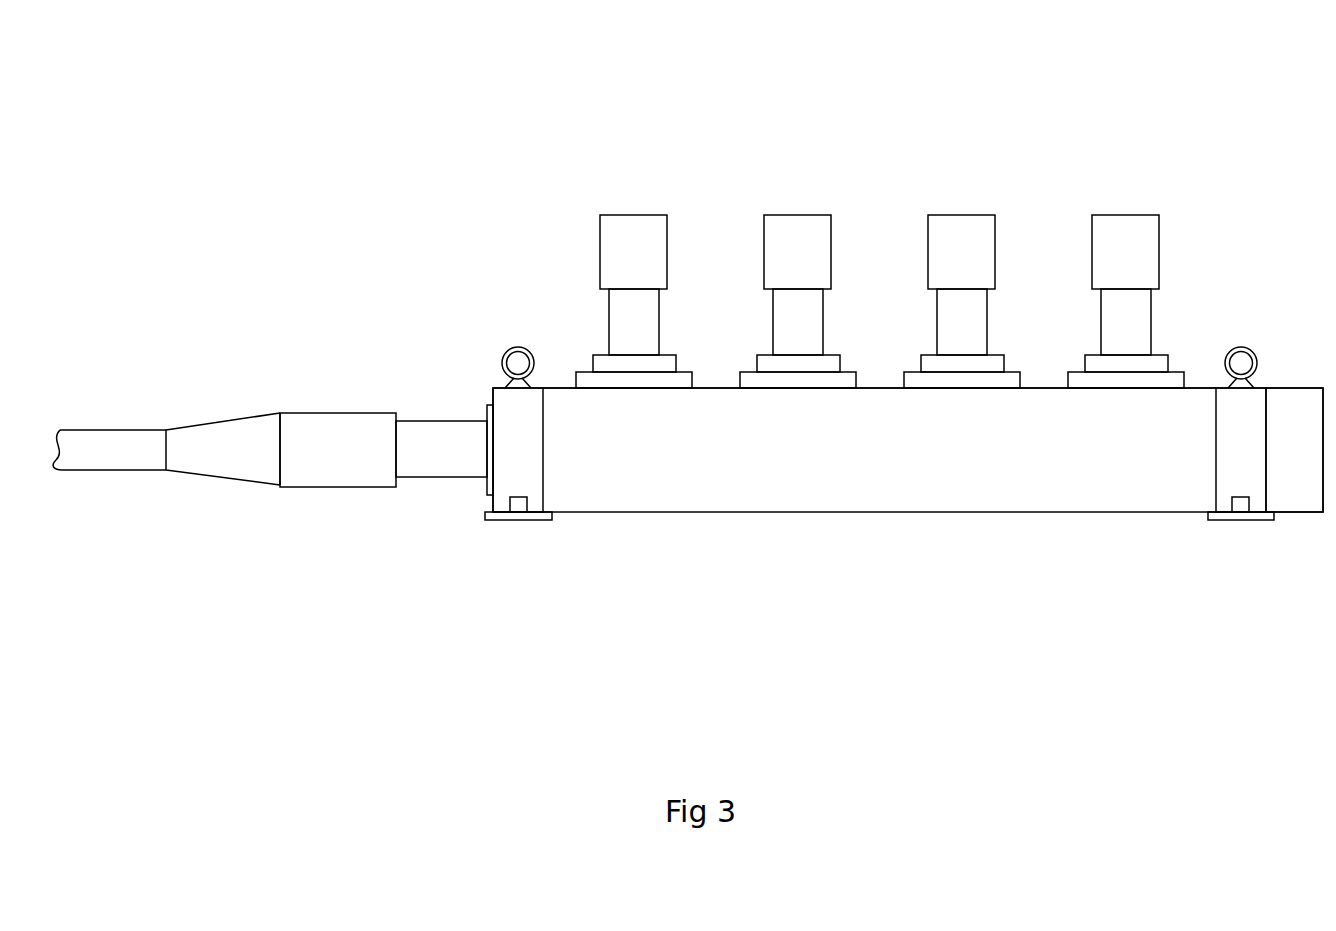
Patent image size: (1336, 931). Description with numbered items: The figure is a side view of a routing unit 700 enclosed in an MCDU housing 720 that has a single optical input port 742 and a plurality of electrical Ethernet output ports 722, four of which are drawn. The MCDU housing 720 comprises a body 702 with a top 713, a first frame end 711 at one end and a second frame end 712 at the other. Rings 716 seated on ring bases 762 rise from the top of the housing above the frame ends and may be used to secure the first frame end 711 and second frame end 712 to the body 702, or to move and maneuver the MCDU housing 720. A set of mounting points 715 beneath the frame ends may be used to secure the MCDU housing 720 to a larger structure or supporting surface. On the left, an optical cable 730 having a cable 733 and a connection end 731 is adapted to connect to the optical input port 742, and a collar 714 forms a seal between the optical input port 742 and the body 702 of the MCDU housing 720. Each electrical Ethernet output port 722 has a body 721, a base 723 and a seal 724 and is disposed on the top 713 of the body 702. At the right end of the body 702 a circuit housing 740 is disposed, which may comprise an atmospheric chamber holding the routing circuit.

The routing unit 700 is at (313, 195).
The body 702 is at (690, 448).
The first frame end 711 is at (512, 410).
The second frame end 712 is at (1250, 467).
The top 713 is at (872, 388).
The collar 714 is at (487, 414).
The mounting points 715 is at (497, 522).
The rings 716 is at (1238, 350).
The MCDU housing 720 is at (1020, 153).
The body 721 is at (657, 312).
The electrical Ethernet output ports 722 is at (626, 235).
The base 723 is at (591, 355).
The seal 724 is at (577, 372).
The optical cable 730 is at (330, 550).
The connection end 731 is at (313, 452).
The cable 733 is at (117, 450).
The circuit housing 740 is at (1282, 482).
The optical input port 742 is at (443, 450).
The ring bases 762 is at (1258, 388).